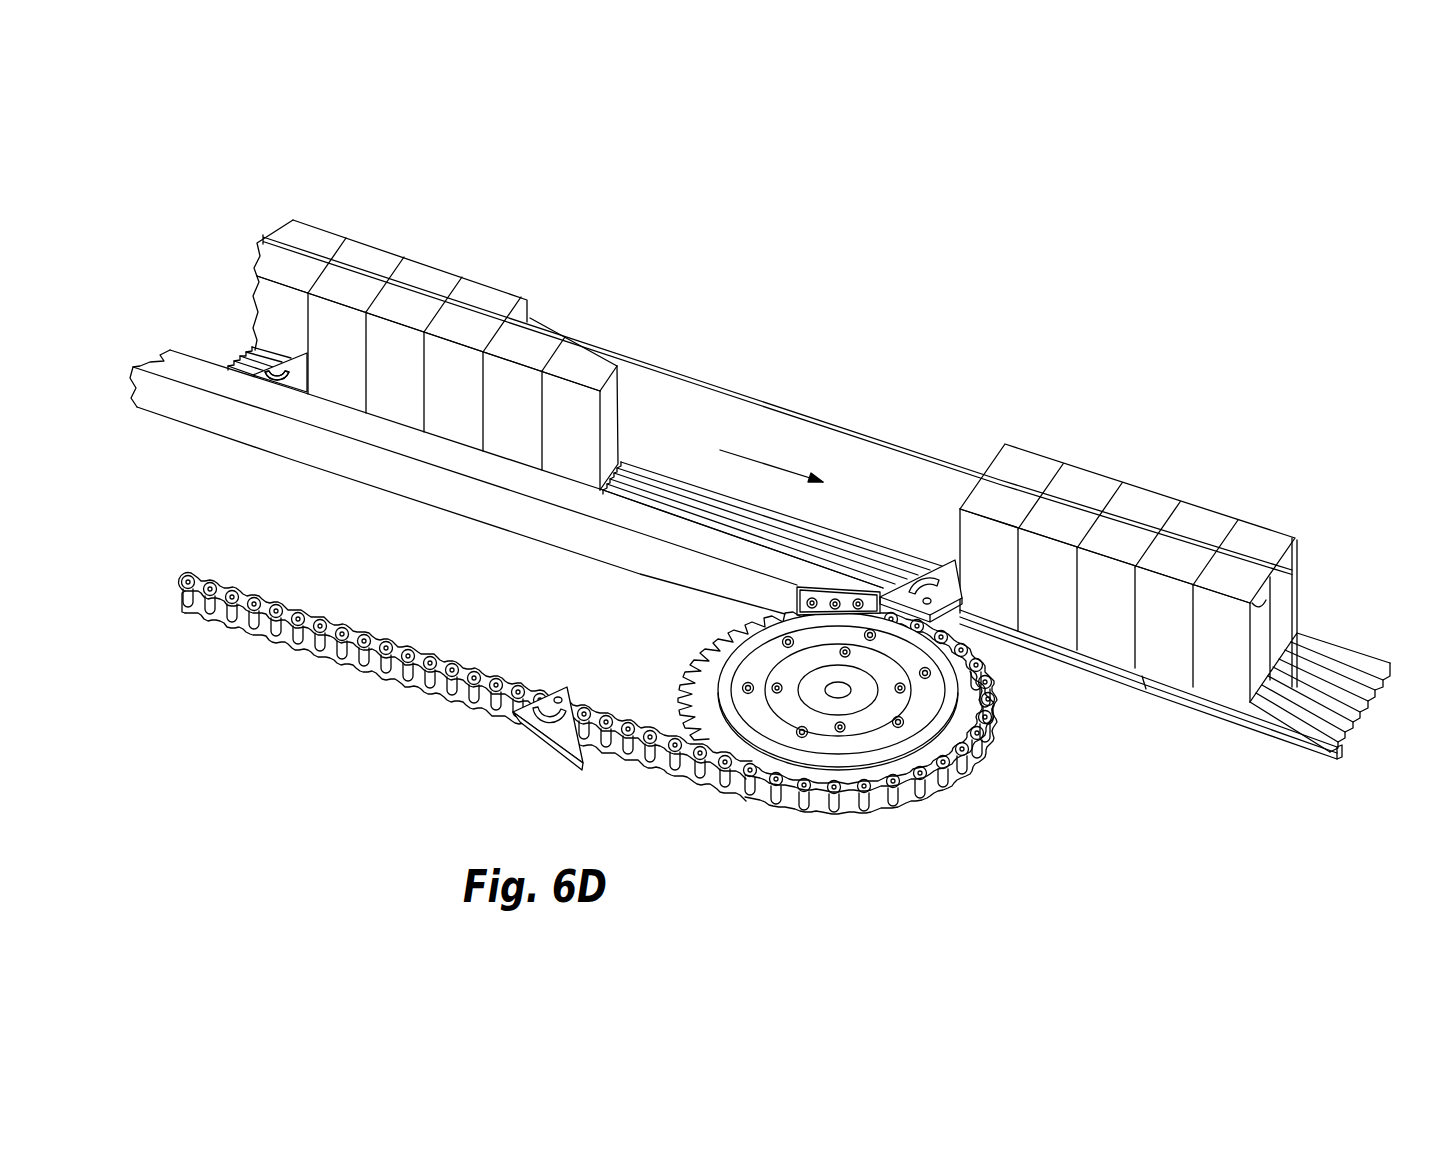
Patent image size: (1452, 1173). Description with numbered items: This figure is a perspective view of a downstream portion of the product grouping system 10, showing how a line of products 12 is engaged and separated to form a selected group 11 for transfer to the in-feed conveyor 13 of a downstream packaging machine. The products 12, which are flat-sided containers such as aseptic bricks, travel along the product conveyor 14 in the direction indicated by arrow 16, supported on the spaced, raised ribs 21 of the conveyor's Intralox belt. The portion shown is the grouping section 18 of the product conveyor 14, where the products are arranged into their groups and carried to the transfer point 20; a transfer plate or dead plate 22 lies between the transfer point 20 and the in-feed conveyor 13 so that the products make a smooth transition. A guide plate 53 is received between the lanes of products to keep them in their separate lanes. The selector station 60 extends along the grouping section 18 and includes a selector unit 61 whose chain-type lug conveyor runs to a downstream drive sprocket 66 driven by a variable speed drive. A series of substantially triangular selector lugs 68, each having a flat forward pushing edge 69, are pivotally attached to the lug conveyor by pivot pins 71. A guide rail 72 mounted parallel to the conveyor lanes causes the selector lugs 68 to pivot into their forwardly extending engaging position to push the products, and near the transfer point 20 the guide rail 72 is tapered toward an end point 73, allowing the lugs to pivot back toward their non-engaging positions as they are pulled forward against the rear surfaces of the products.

The product grouping system 10 is at (842, 290).
The group of products 11 is at (533, 322).
The products 12 is at (443, 280).
The in-feed conveyor 13 is at (1332, 672).
The product conveyor 14 is at (813, 533).
The arrow 16 is at (765, 462).
The grouping section 18 is at (667, 493).
The transfer point 20 is at (992, 637).
The raised ribs 21 is at (236, 354).
The transfer plate 22 is at (1120, 672).
The guide plate 53 is at (703, 403).
The selector station 60 is at (690, 310).
The selector unit 61 is at (685, 800).
The drive sprocket 66 is at (855, 757).
The selector lugs 68 is at (280, 368).
The forward pushing edge 69 is at (305, 390).
The pivot pin 71 is at (535, 695).
The guide rails 72 is at (265, 433).
The end point 73 is at (823, 587).